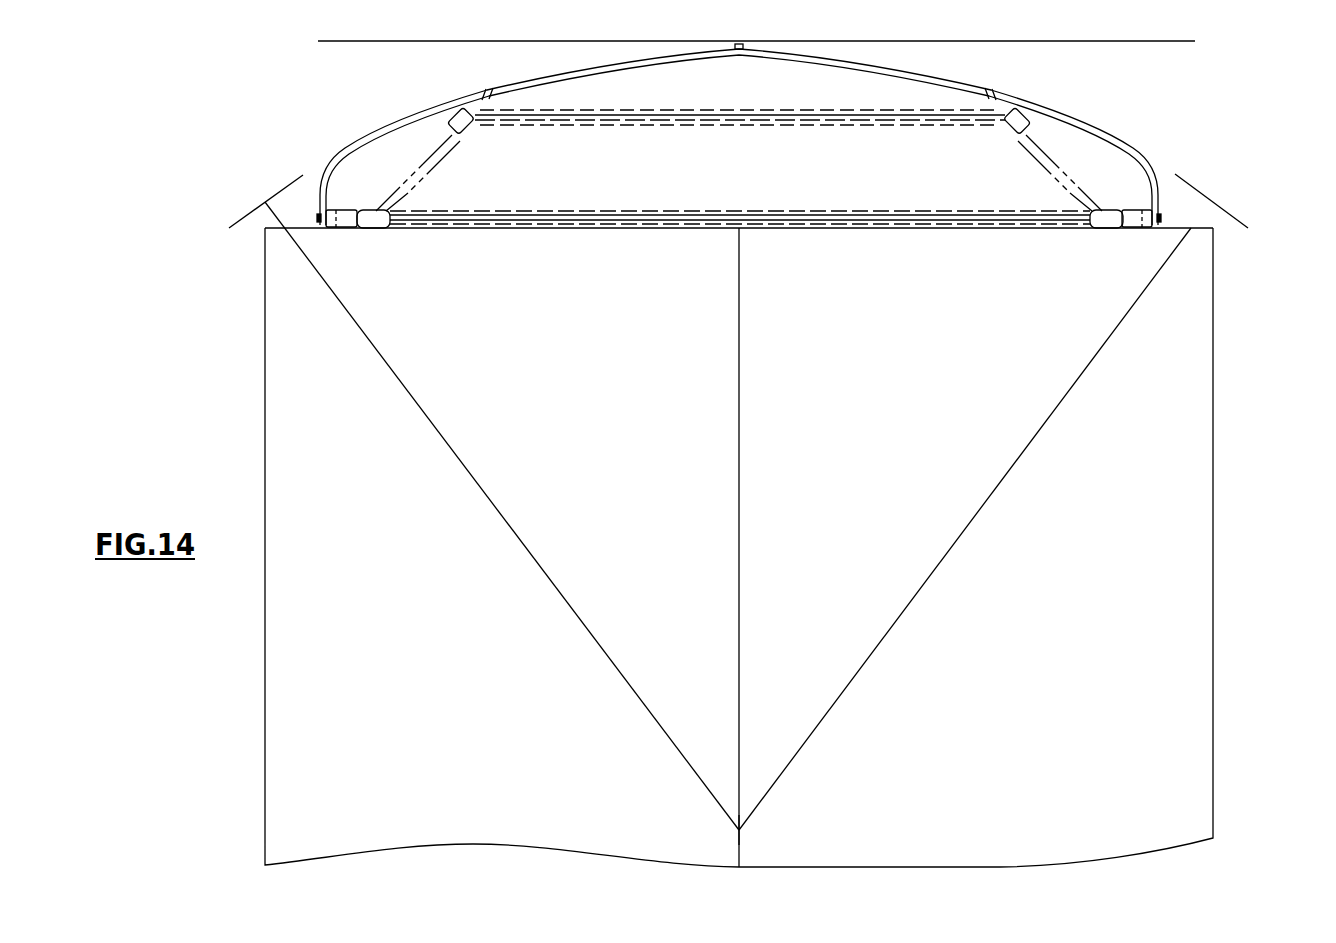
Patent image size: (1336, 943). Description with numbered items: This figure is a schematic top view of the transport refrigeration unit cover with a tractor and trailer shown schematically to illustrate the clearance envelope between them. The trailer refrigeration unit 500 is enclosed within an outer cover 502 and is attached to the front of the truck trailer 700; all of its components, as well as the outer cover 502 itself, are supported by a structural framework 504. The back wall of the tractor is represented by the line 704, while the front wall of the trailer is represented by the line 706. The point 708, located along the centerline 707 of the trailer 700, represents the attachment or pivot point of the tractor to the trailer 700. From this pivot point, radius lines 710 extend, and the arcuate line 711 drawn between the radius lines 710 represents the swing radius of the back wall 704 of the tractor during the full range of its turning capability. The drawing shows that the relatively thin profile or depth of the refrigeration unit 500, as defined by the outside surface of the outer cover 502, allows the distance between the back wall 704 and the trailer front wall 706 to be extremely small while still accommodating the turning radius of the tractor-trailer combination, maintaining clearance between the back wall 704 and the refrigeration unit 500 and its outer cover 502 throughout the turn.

The trailer refrigeration unit 500 is at (310, 210).
The outer cover 502 is at (553, 72).
The structural framework 504 is at (553, 127).
The truck trailer 700 is at (1212, 518).
The back wall of the tractor 704 is at (340, 42).
The front wall of the trailer 706 is at (1213, 226).
The centerline 707 is at (741, 657).
The attachment/pivot point 708 is at (741, 828).
The radius lines 710 is at (587, 628).
The arcuate line 711 is at (1200, 190).